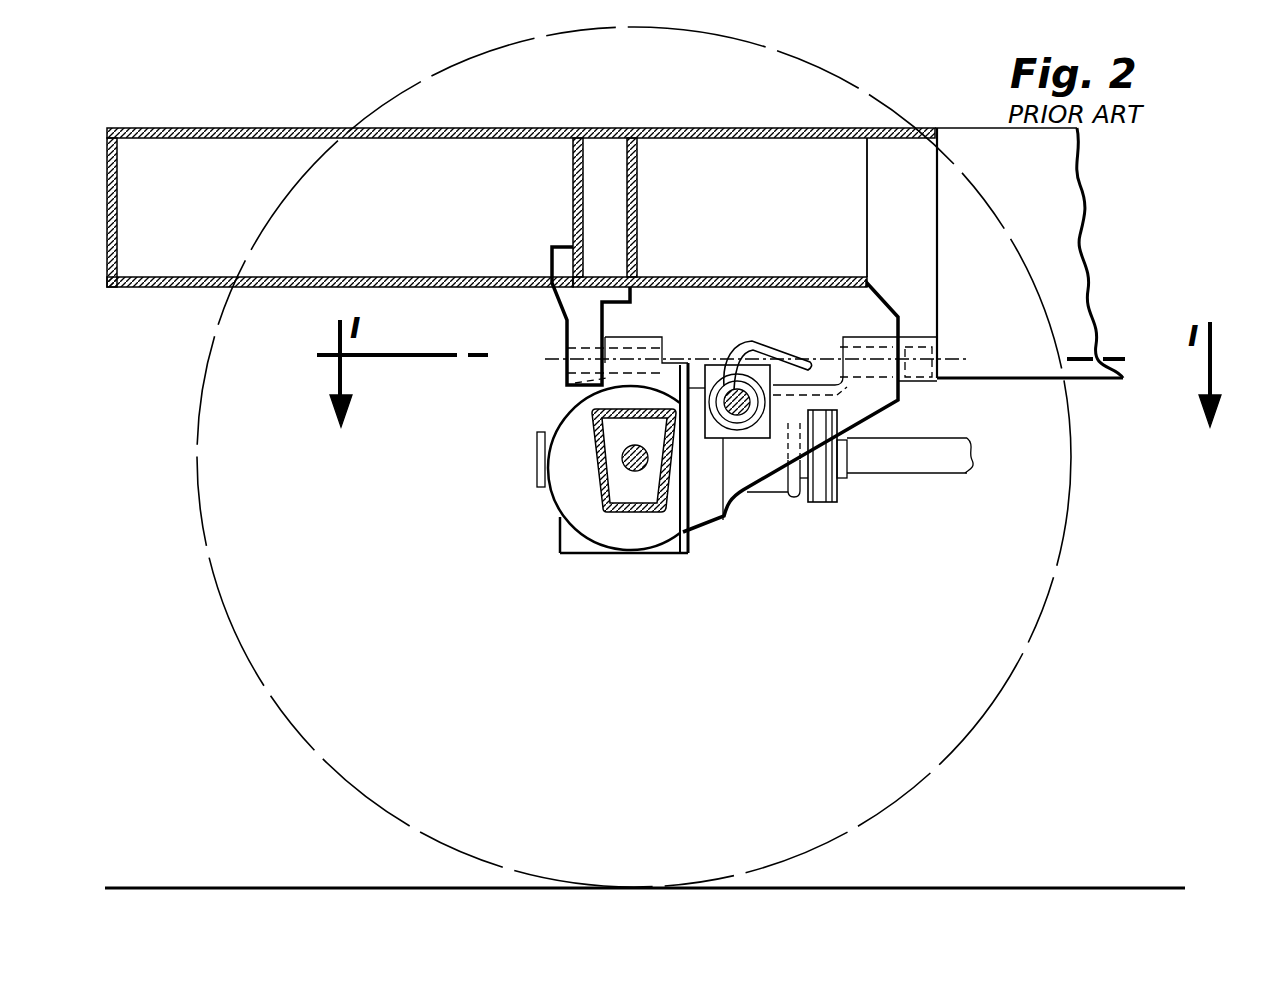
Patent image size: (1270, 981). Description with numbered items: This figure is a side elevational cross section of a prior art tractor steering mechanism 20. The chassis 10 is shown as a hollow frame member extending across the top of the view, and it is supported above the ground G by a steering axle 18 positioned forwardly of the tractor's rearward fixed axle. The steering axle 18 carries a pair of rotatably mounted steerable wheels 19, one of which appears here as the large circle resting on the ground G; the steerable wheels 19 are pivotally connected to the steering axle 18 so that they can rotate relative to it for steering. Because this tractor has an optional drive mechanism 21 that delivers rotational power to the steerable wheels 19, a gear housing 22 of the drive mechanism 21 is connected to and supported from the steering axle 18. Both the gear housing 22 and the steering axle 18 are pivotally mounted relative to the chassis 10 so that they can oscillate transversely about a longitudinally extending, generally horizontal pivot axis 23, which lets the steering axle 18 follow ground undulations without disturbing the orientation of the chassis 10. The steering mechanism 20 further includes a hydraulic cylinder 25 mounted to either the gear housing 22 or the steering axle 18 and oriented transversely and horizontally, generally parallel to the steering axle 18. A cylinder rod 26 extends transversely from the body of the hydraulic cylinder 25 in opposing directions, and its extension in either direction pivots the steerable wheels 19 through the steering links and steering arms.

The chassis 10 is at (257, 128).
The steering axle 18 is at (597, 475).
The steerable wheels 19 is at (1012, 673).
The steering mechanism 20 is at (774, 304).
The drive mechanism 21 is at (913, 465).
The gear housing 22 is at (660, 555).
The pivot axis 23 is at (553, 362).
The hydraulic cylinder 25 is at (752, 480).
The cylinder rod 26 is at (734, 398).
The ground G is at (1012, 887).